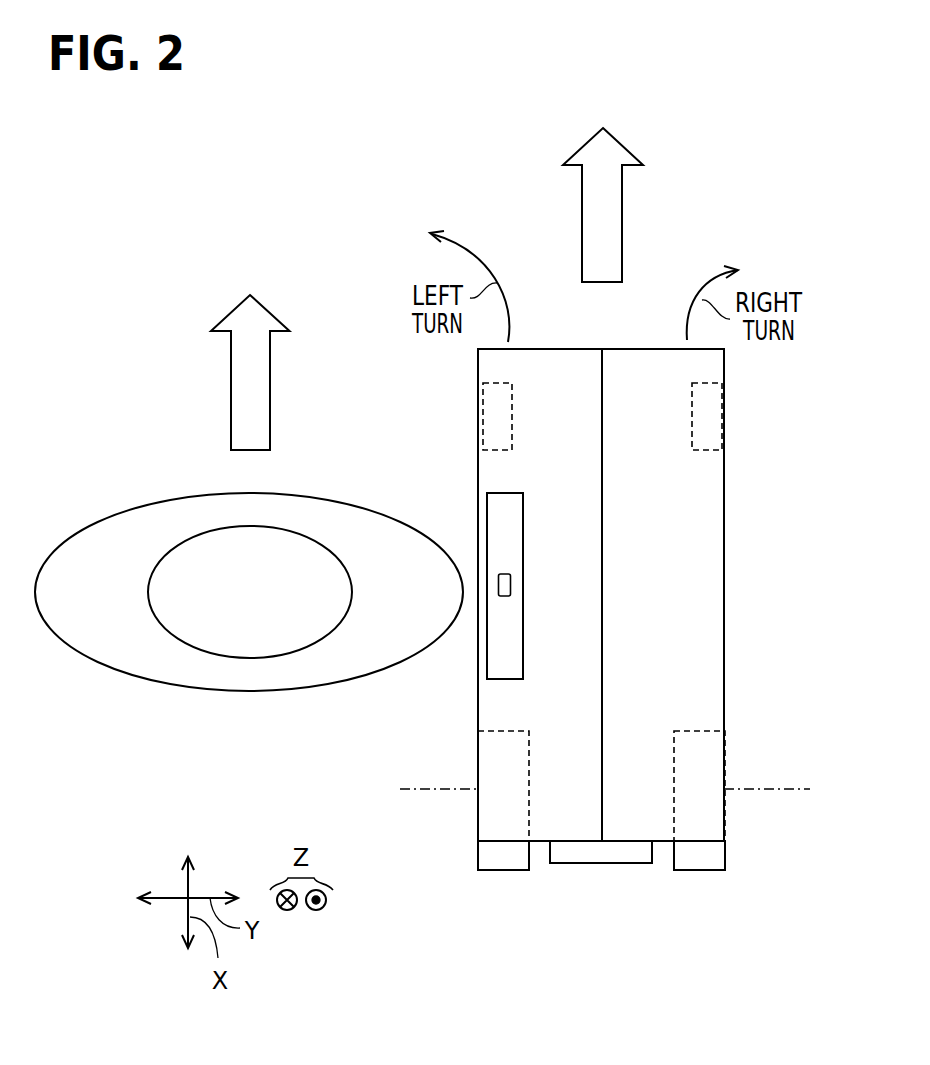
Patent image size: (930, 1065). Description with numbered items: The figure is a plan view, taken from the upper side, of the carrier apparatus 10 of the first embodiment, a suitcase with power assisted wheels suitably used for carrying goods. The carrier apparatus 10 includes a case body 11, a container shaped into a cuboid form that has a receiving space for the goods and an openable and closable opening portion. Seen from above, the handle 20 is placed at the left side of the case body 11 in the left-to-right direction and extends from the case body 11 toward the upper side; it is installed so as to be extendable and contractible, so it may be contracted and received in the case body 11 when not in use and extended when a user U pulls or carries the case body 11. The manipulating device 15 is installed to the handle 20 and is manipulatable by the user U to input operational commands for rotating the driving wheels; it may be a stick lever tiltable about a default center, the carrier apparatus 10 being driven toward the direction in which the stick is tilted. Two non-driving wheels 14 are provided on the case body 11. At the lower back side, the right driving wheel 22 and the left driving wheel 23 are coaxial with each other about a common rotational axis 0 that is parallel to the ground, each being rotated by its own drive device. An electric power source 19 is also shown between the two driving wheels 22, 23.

The carrier apparatus 10 is at (732, 456).
The case body 11 is at (726, 593).
The non-driving wheels 14 is at (498, 384).
The manipulating device 15 is at (505, 598).
The handle 20 is at (507, 681).
The electric power source 19 is at (597, 865).
The right driving wheel 22 is at (698, 872).
The left driving wheel 23 is at (498, 872).
The rotational axis 0 is at (768, 794).
The user U is at (204, 690).